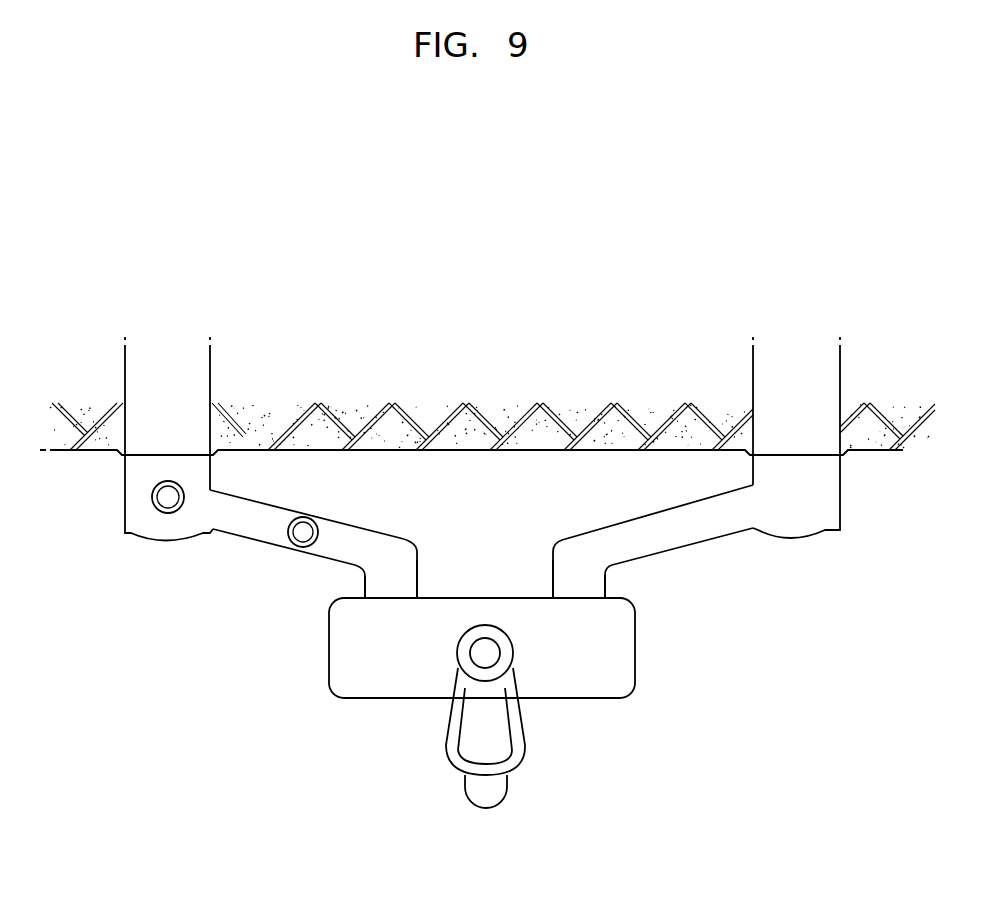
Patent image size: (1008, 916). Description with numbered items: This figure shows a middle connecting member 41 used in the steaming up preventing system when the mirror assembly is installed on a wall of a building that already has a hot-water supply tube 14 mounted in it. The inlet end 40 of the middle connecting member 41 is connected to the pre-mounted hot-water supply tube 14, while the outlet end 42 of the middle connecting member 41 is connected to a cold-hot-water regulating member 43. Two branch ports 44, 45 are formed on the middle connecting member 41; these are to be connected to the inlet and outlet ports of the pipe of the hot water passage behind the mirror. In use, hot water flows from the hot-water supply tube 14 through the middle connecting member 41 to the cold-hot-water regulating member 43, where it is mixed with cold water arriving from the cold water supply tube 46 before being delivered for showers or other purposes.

The hot-water supply tube 14 is at (195, 380).
The inlet end 40 is at (150, 467).
The middle connecting member 41 is at (262, 545).
The outlet end 42 is at (400, 568).
The cold-hot-water regulating member 43 is at (355, 705).
The branch port 44 is at (152, 497).
The branch port 45 is at (308, 518).
The cold water supply tube 46 is at (682, 532).